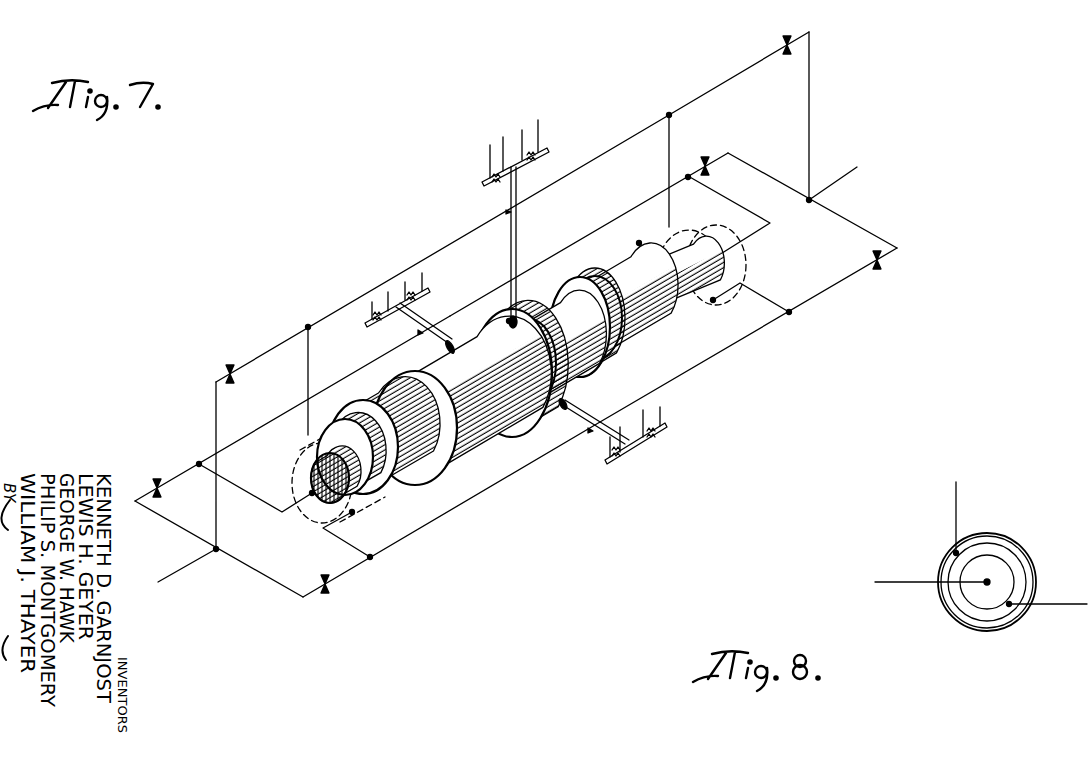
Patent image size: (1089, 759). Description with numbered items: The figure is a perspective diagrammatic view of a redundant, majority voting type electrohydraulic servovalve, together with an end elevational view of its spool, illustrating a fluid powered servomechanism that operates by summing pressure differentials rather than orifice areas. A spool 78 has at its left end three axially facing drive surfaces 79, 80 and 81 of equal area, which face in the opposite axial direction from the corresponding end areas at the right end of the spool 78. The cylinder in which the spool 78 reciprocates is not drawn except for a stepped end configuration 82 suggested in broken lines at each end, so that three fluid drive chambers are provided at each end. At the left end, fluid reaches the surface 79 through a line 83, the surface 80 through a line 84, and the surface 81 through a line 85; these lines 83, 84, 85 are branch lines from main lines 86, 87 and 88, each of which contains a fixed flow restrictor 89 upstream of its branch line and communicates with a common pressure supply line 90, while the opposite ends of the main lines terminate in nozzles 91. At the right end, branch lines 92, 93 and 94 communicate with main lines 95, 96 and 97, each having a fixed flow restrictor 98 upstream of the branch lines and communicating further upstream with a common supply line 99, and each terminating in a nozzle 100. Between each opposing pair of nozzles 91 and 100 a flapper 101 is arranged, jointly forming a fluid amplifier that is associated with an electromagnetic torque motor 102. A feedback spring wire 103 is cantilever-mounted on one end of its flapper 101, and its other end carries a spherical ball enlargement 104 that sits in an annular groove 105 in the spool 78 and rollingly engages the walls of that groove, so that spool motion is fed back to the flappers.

In FIG. 7, the spool 78 is at (448, 482).
In FIG. 8, the spool 78 is at (998, 533).
In FIG. 7, the drive surface 79 is at (407, 494).
In FIG. 8, the drive surface 79 is at (1031, 578).
In FIG. 7, the drive surface 80 is at (377, 504).
In FIG. 8, the drive surface 80 is at (1013, 565).
In FIG. 7, the drive surface 81 is at (345, 503).
In FIG. 8, the drive surface 81 is at (998, 563).
In FIG. 7, the stepped end configuration 82 is at (680, 231).
In FIG. 7, the branch line 83 is at (308, 371).
In FIG. 8, the branch line 83 is at (956, 503).
In FIG. 7, the branch line 84 is at (336, 536).
In FIG. 8, the branch line 84 is at (1067, 605).
In FIG. 7, the branch line 85 is at (255, 497).
In FIG. 8, the branch line 85 is at (914, 570).
In FIG. 7, the main line 86 is at (328, 316).
In FIG. 7, the main line 87 is at (352, 568).
In FIG. 7, the main line 88 is at (258, 429).
In FIG. 7, the fixed flow restrictor 89 is at (230, 366).
In FIG. 7, the common pressure supply line 90 is at (180, 571).
In FIG. 7, the nozzle 91 is at (505, 212).
In FIG. 7, the branch line 92 is at (669, 166).
In FIG. 7, the branch line 93 is at (770, 312).
In FIG. 7, the branch line 94 is at (756, 226).
In FIG. 7, the main line 95 is at (648, 128).
In FIG. 7, the main line 96 is at (765, 325).
In FIG. 7, the main line 97 is at (617, 218).
In FIG. 7, the fixed flow restrictor 98 is at (786, 56).
In FIG. 7, the common supply line 99 is at (840, 182).
In FIG. 7, the nozzle 100 is at (519, 197).
In FIG. 7, the flapper 101 is at (518, 180).
In FIG. 7, the electromagnetic torque motor 102 is at (484, 168).
In FIG. 7, the feedback spring wire 103 is at (503, 250).
In FIG. 7, the spherical ball enlargement 104 is at (522, 322).
In FIG. 7, the annular groove 105 is at (507, 321).